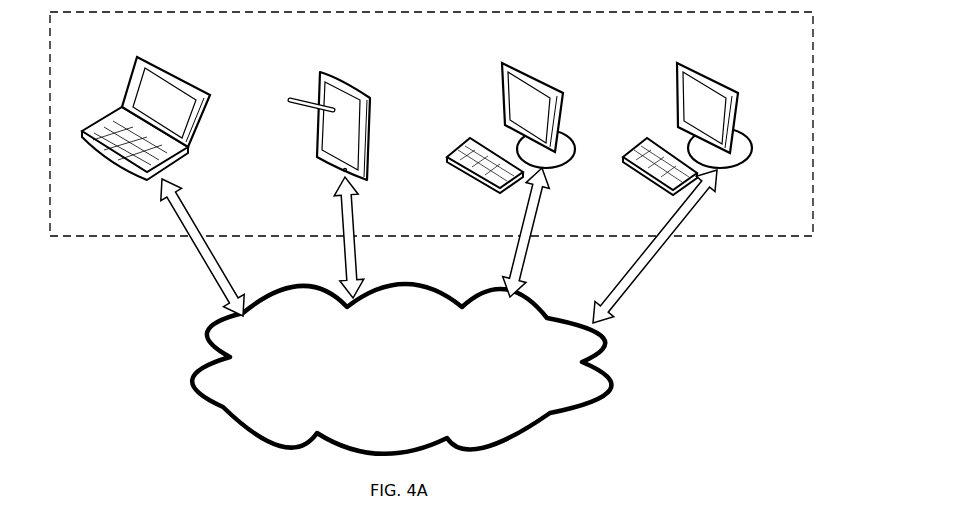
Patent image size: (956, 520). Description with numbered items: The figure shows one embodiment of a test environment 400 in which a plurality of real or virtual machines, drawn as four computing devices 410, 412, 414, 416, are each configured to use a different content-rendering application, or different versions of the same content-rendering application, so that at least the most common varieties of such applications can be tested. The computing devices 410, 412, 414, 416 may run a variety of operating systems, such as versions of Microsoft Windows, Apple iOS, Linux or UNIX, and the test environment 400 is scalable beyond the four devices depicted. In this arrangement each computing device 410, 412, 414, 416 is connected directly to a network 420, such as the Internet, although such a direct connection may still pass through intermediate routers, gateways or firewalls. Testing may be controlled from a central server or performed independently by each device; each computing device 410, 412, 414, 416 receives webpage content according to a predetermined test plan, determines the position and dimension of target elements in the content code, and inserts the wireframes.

The test environment 400 is at (266, 32).
The computing device 410 is at (187, 78).
The computing device 412 is at (350, 82).
The computing device 414 is at (540, 73).
The computing device 416 is at (700, 70).
The network 420 is at (600, 367).